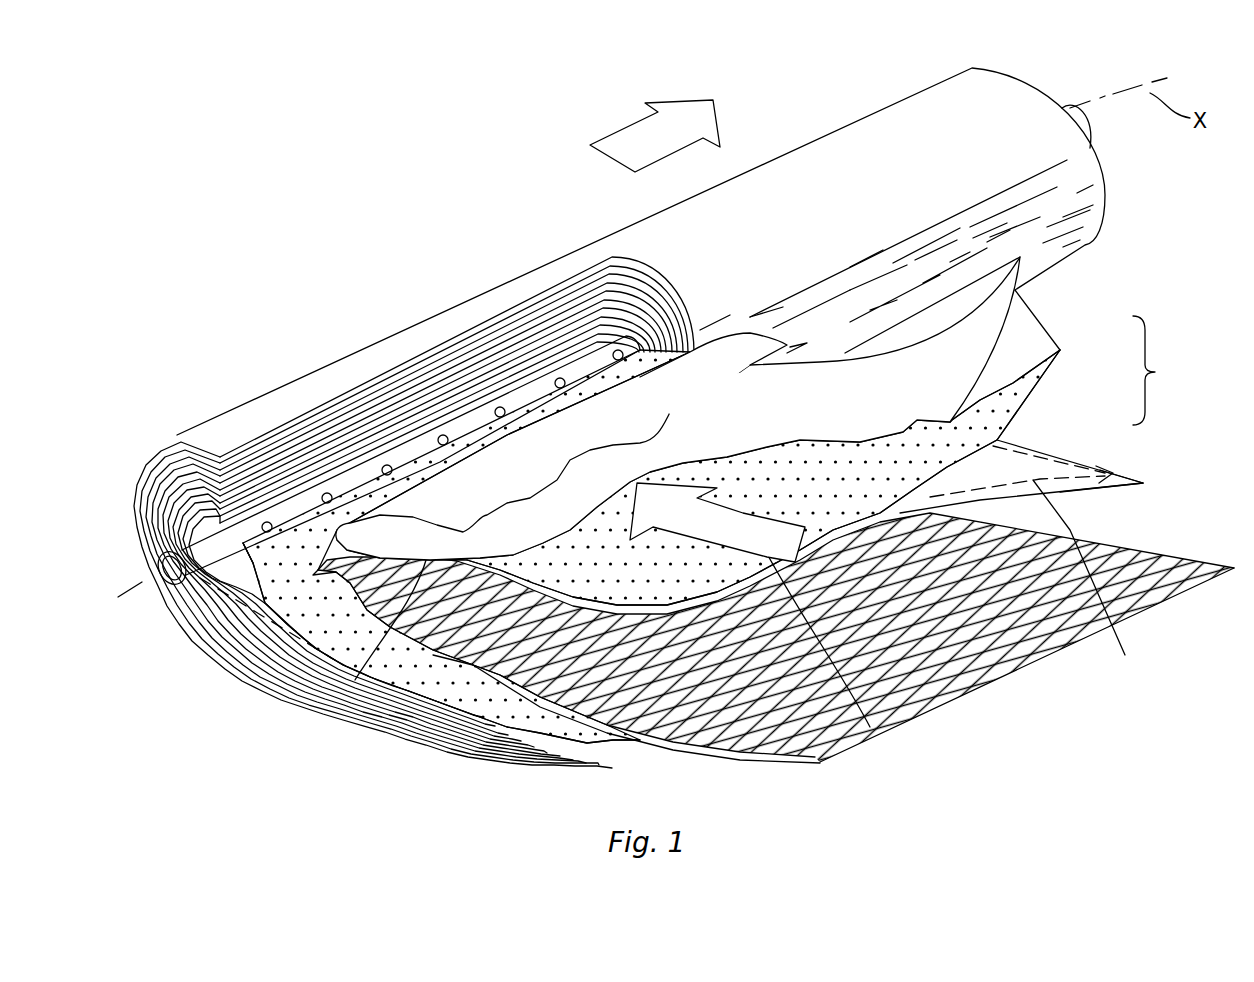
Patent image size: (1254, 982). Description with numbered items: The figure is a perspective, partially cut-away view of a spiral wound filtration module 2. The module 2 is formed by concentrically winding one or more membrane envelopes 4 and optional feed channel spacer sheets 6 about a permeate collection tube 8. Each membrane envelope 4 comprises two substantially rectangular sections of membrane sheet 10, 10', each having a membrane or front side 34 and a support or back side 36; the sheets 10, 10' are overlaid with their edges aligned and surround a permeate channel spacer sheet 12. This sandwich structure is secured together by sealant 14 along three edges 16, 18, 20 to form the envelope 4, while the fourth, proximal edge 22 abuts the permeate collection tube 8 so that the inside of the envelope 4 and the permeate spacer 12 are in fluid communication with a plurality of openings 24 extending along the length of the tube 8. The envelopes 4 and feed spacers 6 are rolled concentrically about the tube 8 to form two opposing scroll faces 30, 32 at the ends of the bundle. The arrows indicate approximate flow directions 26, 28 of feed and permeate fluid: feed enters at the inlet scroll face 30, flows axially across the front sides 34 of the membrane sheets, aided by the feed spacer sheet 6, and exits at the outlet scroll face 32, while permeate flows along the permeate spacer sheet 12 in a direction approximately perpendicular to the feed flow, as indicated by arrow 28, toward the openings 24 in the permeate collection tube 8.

The spiral wound filtration module 2 is at (503, 255).
The membrane envelope 4 is at (1158, 372).
The feed channel spacer sheet 6 is at (973, 680).
The permeate collection tube 8 is at (163, 468).
The membrane sheet 10 is at (1021, 453).
The membrane sheet 10' is at (741, 408).
The permeate channel spacer sheet 12 is at (447, 688).
The sealant 14 is at (513, 730).
The edge 16 is at (355, 680).
The edge 18 is at (1113, 468).
The edge 20 is at (1103, 489).
The proximal edge 22 is at (305, 512).
The openings 24 is at (350, 512).
The flow direction 26 is at (613, 133).
The flow direction 28 is at (870, 727).
The inlet scroll face 30 is at (200, 553).
The outlet scroll face 32 is at (1072, 112).
The front side 34 is at (767, 755).
The back side 36 is at (1178, 600).